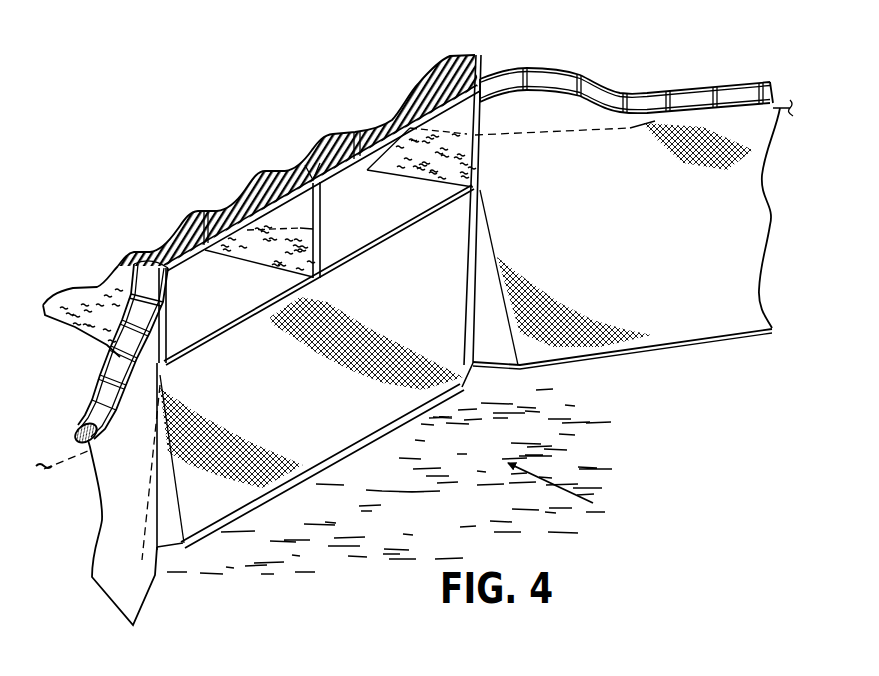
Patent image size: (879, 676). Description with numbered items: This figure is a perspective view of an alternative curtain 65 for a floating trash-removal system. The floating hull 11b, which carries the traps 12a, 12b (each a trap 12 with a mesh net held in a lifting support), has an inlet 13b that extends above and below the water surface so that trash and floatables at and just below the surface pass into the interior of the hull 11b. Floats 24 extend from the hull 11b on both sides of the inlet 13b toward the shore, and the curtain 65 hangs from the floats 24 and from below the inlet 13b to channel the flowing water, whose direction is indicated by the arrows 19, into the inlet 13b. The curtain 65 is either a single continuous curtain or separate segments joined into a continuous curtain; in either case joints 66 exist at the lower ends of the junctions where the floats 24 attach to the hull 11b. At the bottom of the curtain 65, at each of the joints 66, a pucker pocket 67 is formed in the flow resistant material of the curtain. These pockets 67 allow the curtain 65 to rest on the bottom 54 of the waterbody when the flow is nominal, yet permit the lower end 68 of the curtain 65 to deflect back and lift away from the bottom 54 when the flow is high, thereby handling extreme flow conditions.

The floating hull 11b is at (120, 277).
The trap 12 is at (364, 239).
The trap 12a is at (351, 173).
The trap 12b is at (180, 275).
The inlet 13b is at (341, 247).
The float 24 is at (688, 97).
The bottom of the waterbody 54 is at (457, 516).
The arrows indicating direction of water flow 19 is at (553, 490).
The curtain 65 is at (267, 406).
The joint 66 is at (168, 364).
The pucker pocket 67 is at (484, 377).
The lower end of the curtain 68 is at (334, 451).